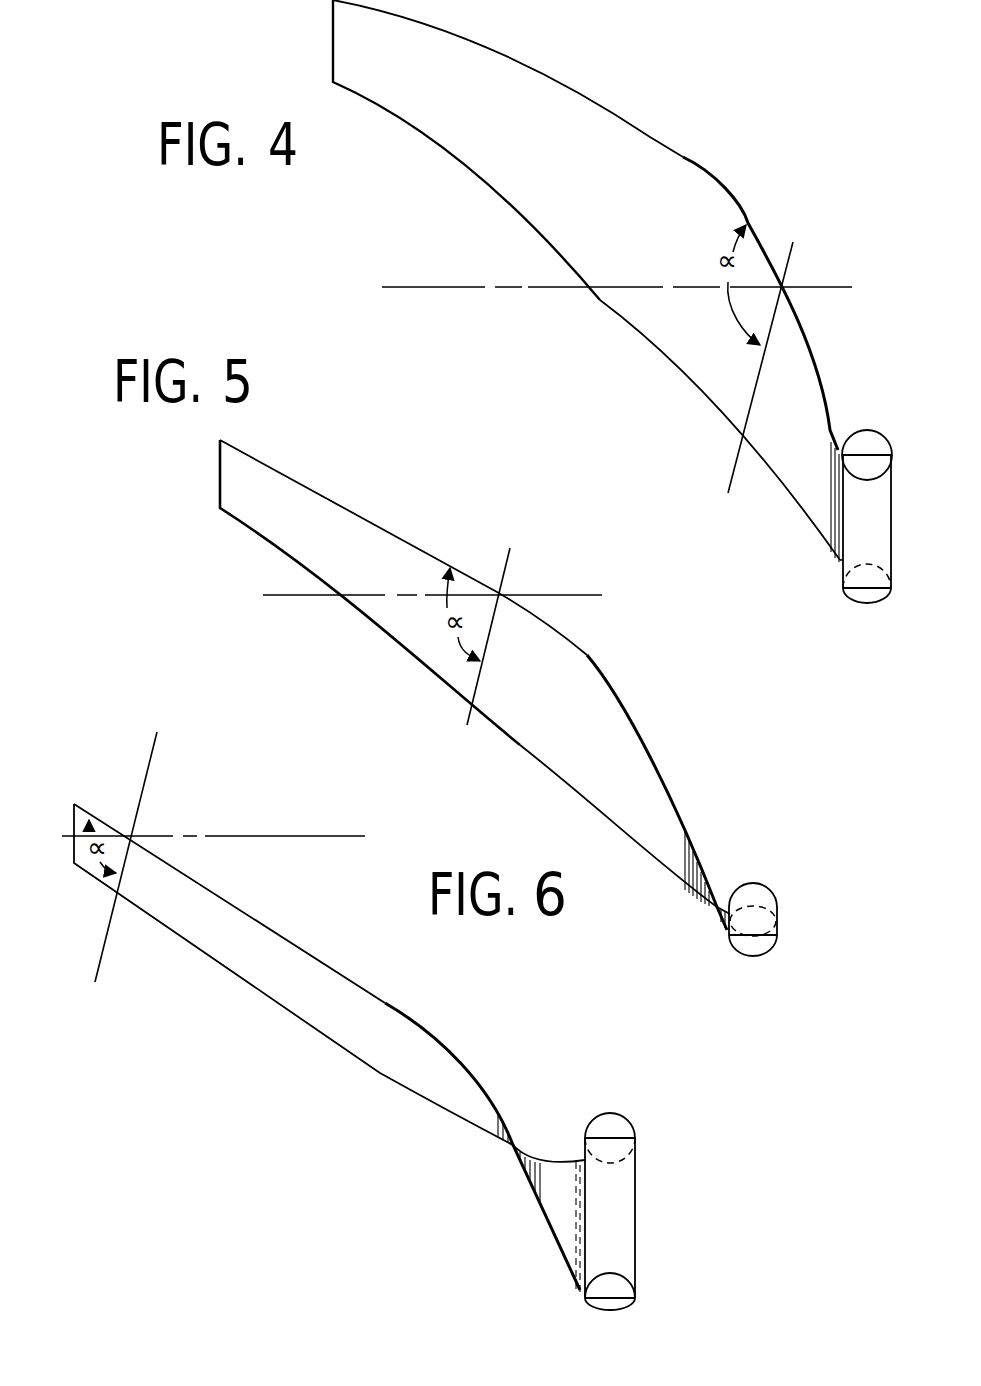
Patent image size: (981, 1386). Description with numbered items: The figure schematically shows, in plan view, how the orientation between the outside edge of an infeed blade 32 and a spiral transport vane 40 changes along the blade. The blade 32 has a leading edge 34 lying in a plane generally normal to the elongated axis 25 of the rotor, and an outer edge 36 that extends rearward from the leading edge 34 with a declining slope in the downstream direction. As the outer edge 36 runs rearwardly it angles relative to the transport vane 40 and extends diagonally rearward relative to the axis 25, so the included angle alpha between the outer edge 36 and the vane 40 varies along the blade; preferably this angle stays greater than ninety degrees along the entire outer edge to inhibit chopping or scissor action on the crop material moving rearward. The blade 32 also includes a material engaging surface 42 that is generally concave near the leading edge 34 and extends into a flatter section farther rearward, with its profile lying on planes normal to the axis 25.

In FIG. 4, the elongated axis 25 is at (466, 287).
In FIG. 5, the elongated axis 25 is at (293, 595).
In FIG. 6, the elongated axis 25 is at (253, 836).
In FIG. 4, the blade 32 is at (689, 156).
In FIG. 5, the blade 32 is at (434, 545).
In FIG. 6, the blade 32 is at (327, 955).
In FIG. 4, the leading edge 34 is at (885, 492).
In FIG. 5, the leading edge 34 is at (754, 958).
In FIG. 6, the leading edge 34 is at (615, 1228).
In FIG. 4, the outer edge 36 is at (732, 193).
In FIG. 5, the outer edge 36 is at (588, 655).
In FIG. 6, the outer edge 36 is at (405, 1018).
In FIG. 4, the spiral transport vanes 40 is at (763, 358).
In FIG. 5, the spiral transport vanes 40 is at (478, 690).
In FIG. 6, the spiral transport vanes 40 is at (98, 968).
In FIG. 4, the material engaging surface 42 is at (633, 226).
In FIG. 5, the material engaging surface 42 is at (570, 742).
In FIG. 6, the material engaging surface 42 is at (267, 986).